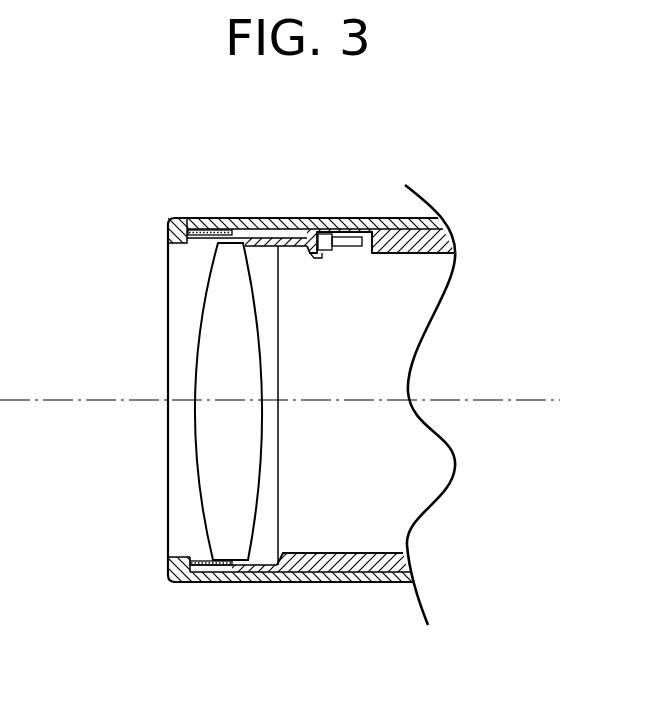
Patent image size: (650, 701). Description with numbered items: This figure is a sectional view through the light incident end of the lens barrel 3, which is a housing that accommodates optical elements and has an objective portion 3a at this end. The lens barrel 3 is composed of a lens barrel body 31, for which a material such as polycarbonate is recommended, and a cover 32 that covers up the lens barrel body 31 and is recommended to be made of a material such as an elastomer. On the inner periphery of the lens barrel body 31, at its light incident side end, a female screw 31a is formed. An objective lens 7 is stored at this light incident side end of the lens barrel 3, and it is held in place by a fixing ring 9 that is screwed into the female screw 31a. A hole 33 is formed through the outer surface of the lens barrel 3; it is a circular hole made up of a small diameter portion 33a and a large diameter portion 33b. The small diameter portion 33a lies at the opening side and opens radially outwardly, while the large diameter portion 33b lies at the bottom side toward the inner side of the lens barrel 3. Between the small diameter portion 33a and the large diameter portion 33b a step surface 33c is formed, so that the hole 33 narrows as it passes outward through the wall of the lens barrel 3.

The lens barrel 3 is at (257, 594).
The objective portion 3a is at (347, 584).
The objective lens 7 is at (207, 448).
The fixing ring 9 is at (212, 241).
The lens barrel body 31 is at (388, 563).
The female screw 31a is at (208, 560).
The cover 32 is at (385, 573).
The hole 33 is at (274, 143).
The small diameter portion 33a is at (323, 232).
The large diameter portion 33b is at (350, 236).
The step surface 33c is at (314, 254).